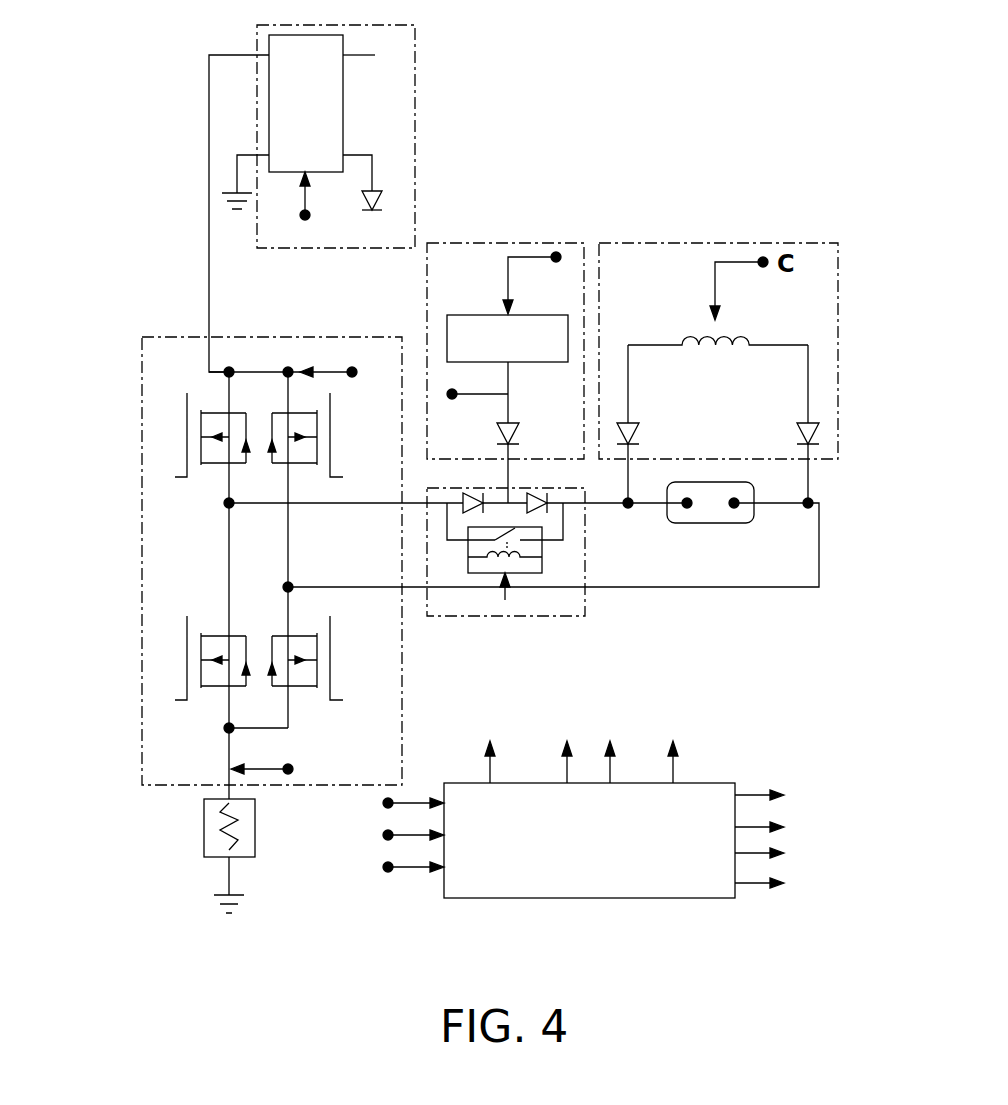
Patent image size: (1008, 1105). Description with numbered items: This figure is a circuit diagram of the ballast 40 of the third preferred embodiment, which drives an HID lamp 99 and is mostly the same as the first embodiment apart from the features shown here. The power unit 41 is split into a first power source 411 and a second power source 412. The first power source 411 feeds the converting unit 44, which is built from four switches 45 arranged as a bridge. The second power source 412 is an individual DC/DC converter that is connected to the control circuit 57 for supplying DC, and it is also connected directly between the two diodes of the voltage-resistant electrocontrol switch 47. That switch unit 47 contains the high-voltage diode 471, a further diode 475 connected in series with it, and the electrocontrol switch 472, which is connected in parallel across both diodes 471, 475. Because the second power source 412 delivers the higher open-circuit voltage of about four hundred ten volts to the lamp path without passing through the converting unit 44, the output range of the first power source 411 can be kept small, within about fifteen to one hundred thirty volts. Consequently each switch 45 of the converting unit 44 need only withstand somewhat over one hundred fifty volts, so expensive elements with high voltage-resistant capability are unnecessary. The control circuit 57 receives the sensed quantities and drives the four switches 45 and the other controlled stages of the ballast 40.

The ballast 40 is at (231, 625).
The power unit 41 is at (498, 92).
The first power source 411 is at (415, 135).
The second power source 412 is at (483, 243).
The converting unit 44 is at (232, 568).
The switch 45 is at (197, 473).
The voltage-resistant electrocontrol switch 47 is at (465, 588).
The high-voltage diode 471 is at (538, 512).
The electrocontrol switch 472 is at (518, 573).
The diode 475 is at (469, 518).
The control circuit 57 is at (590, 898).
The HID lamp 99 is at (753, 520).